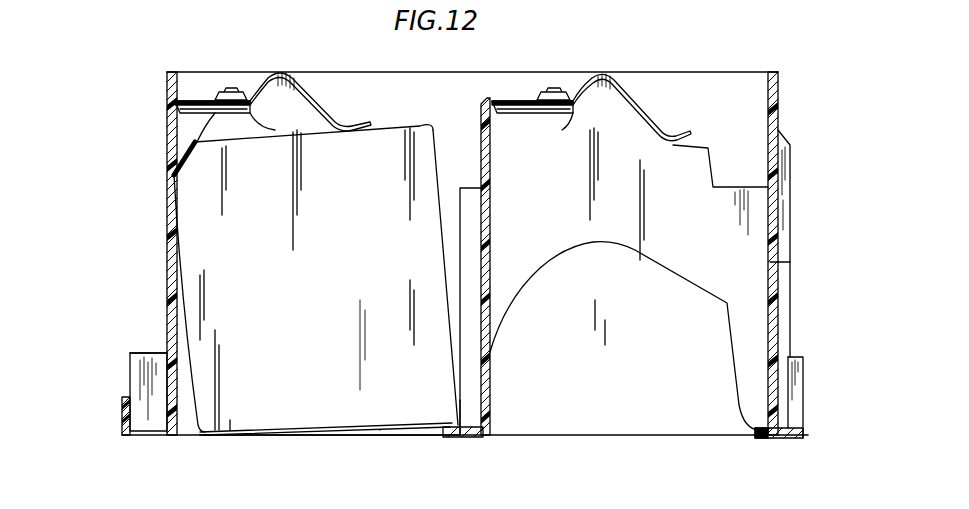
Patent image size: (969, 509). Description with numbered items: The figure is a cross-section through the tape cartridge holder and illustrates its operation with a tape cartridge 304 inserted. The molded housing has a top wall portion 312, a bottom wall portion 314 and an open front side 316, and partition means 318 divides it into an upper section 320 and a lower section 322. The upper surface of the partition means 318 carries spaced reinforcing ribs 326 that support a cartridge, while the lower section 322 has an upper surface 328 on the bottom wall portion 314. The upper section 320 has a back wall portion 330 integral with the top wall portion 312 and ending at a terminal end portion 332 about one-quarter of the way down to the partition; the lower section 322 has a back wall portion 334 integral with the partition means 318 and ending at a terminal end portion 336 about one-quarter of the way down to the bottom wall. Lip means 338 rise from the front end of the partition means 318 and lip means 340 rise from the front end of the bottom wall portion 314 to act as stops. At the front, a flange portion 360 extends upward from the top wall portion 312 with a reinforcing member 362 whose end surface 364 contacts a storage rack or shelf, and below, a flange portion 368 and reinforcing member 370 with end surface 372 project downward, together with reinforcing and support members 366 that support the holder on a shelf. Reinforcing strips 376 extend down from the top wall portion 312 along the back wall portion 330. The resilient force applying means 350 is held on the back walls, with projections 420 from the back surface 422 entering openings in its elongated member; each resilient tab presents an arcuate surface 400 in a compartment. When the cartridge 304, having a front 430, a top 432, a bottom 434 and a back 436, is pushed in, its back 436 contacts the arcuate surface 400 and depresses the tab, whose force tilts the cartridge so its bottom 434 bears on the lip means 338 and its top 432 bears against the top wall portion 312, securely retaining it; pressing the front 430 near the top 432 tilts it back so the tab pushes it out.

The tape cartridge 304 is at (320, 286).
The top wall portion 312 is at (167, 196).
The bottom wall portion 314 is at (780, 219).
The open front side 316 is at (592, 441).
The partition means 318 is at (480, 142).
The upper section 320 is at (260, 439).
The lower section 322 is at (578, 440).
The reinforcing ribs 326 is at (470, 400).
The upper surface 328 is at (790, 262).
The back wall portion 330 is at (210, 100).
The terminal end portion 332 is at (290, 120).
The back wall portion 334 is at (523, 102).
The terminal end portion 336 is at (575, 112).
The lip means 338 is at (452, 437).
The lip means 340 is at (760, 440).
The resilient force applying means 350 is at (348, 102).
The flange portion 360 is at (147, 432).
The reinforcing member 362 is at (137, 388).
The end surface 364 is at (140, 358).
The reinforcing and support members 366 is at (790, 165).
The flange portion 368 is at (787, 440).
The reinforcing member 370 is at (800, 400).
The end surface 372 is at (797, 357).
The reinforcing strips 376 is at (182, 125).
The arcuate surface 400 is at (673, 143).
The projections 420 is at (247, 88).
The back surface 422 is at (197, 98).
The front 430 is at (307, 432).
The top 432 is at (174, 281).
The bottom 434 is at (440, 236).
The back 436 is at (393, 132).